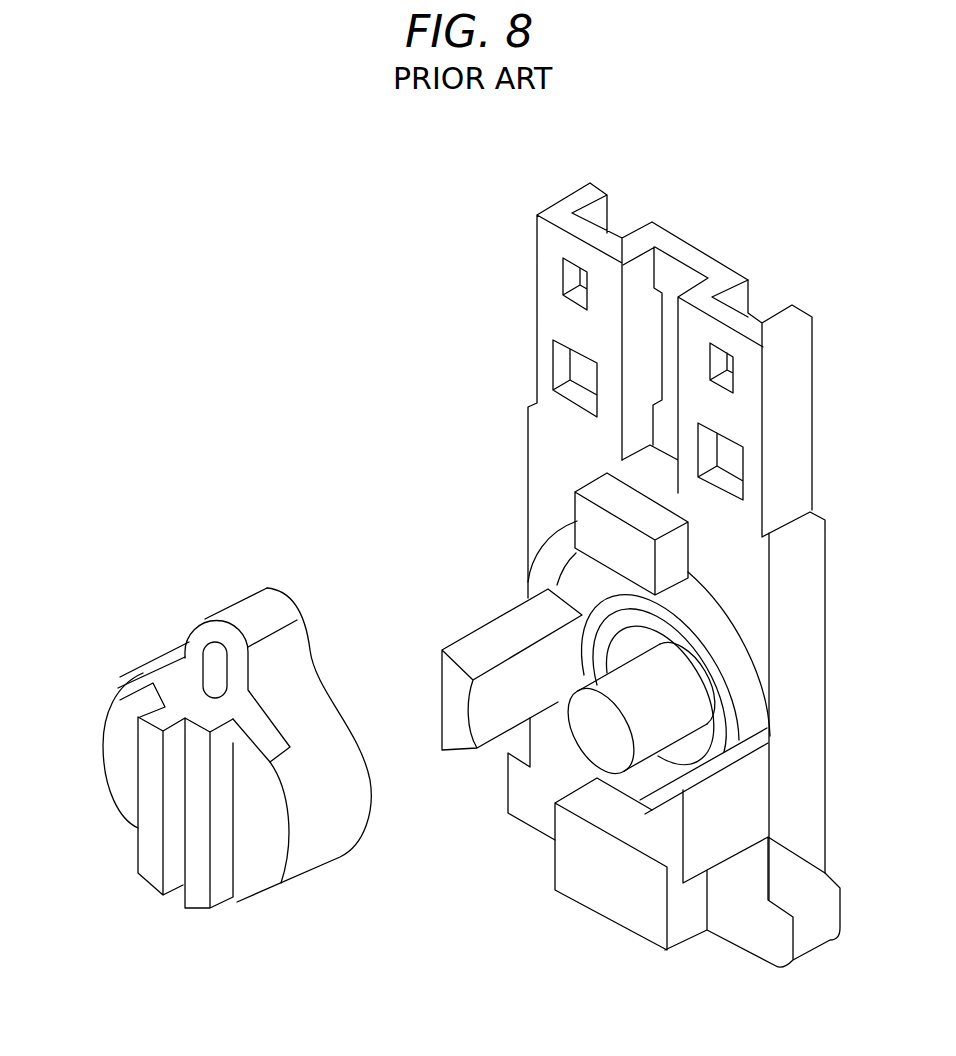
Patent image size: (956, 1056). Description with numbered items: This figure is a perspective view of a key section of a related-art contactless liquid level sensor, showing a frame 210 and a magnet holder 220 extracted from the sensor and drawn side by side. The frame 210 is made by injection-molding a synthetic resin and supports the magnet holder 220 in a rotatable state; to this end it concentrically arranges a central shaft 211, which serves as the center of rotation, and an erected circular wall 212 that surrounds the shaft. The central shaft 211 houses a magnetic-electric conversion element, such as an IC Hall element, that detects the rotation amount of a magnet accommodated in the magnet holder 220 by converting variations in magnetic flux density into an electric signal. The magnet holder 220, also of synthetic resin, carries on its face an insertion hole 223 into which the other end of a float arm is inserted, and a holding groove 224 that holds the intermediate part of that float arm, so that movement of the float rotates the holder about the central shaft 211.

The frame 210 is at (535, 342).
The central shaft 211 is at (643, 677).
The erected circular wall 212 is at (725, 638).
The magnet holder 220 is at (143, 673).
The insertion hole 223 is at (214, 679).
The holding groove 224 is at (179, 897).